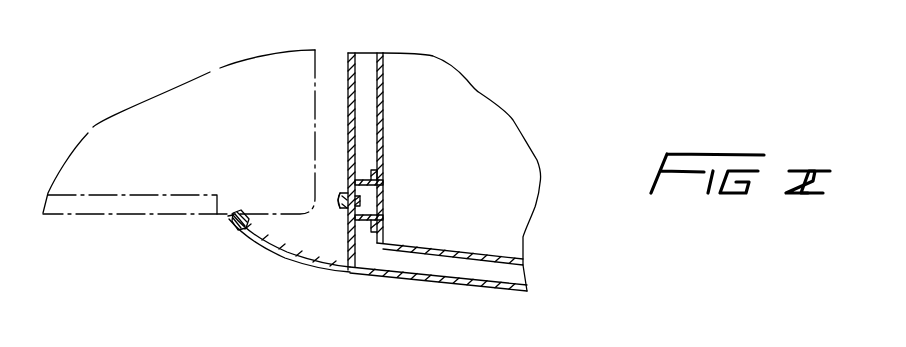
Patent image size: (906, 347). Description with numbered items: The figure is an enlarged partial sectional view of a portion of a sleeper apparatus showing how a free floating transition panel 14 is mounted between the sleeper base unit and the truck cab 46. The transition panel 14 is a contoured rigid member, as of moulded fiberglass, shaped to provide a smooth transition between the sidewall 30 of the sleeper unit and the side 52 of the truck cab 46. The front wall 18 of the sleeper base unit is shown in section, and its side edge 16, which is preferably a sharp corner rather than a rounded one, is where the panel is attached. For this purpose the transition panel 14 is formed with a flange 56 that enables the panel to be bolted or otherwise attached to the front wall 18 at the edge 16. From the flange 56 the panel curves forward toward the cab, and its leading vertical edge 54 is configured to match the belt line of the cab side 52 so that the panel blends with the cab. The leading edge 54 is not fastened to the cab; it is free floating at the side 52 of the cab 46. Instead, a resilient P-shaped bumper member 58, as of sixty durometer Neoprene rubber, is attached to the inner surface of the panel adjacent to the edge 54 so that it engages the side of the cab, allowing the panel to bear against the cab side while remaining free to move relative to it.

The transition panel 14 is at (293, 262).
The side edge of front wall 16 is at (352, 270).
The front wall 18 is at (345, 65).
The sidewall 30 is at (435, 278).
The cab 46 is at (172, 81).
The side of truck cab 52 is at (148, 213).
The leading vertical edge 54 is at (230, 218).
The flange 56 is at (345, 243).
The P-shaped bumper member 58 is at (236, 213).